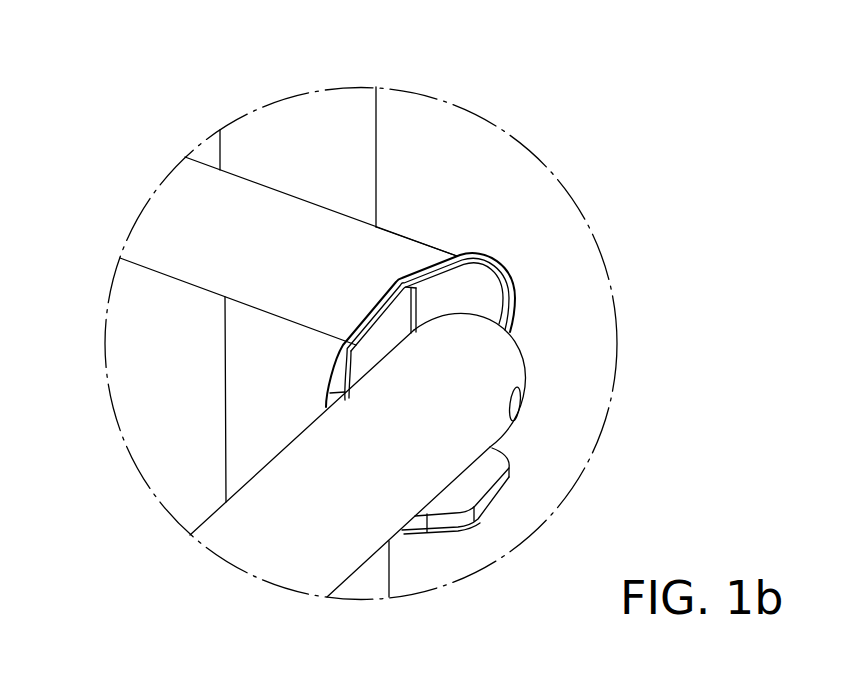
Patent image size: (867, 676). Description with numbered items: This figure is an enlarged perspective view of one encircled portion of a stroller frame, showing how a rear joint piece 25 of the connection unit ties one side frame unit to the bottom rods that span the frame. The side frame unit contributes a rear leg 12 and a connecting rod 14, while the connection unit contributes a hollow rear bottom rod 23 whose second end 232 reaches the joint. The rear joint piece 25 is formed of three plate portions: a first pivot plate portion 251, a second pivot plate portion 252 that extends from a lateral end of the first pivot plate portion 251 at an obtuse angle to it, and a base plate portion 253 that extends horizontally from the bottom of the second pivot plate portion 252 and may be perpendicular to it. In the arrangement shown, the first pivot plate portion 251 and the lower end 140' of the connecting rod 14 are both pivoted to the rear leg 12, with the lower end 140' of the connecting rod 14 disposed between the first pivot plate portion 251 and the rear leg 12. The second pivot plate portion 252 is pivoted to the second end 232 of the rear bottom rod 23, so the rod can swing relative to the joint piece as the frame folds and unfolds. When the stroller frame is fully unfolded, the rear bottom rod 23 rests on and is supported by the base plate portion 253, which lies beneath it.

The rear leg 12 is at (380, 158).
The connecting rod 14 is at (182, 213).
The lower end of the connecting rod 140' is at (434, 213).
The rear bottom rod 23 is at (240, 488).
The rear joint piece 25 is at (512, 279).
The first pivot plate portion 251 is at (497, 303).
The second pivot plate portion 252 is at (360, 322).
The second end of the rear bottom rod 232 is at (477, 412).
The base plate portion 253 is at (475, 487).